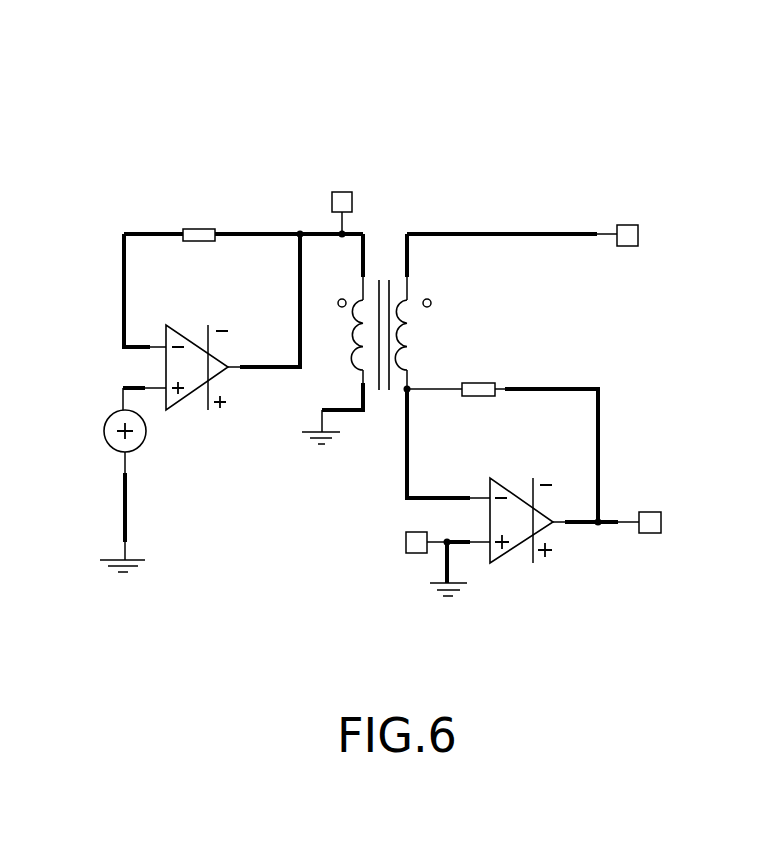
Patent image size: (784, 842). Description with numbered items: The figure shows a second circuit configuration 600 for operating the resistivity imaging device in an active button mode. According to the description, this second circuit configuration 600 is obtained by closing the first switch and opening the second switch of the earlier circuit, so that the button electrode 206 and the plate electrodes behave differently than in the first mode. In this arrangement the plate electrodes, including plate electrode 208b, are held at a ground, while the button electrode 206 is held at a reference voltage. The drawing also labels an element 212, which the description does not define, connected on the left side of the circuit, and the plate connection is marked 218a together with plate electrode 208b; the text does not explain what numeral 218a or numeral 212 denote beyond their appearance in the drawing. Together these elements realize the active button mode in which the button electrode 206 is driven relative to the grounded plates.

The second circuit configuration 600 is at (235, 153).
The button electrode 206 is at (620, 225).
The voltage source 212 is at (113, 448).
The plate 218a is at (346, 571).
The plate electrode 208b is at (410, 555).